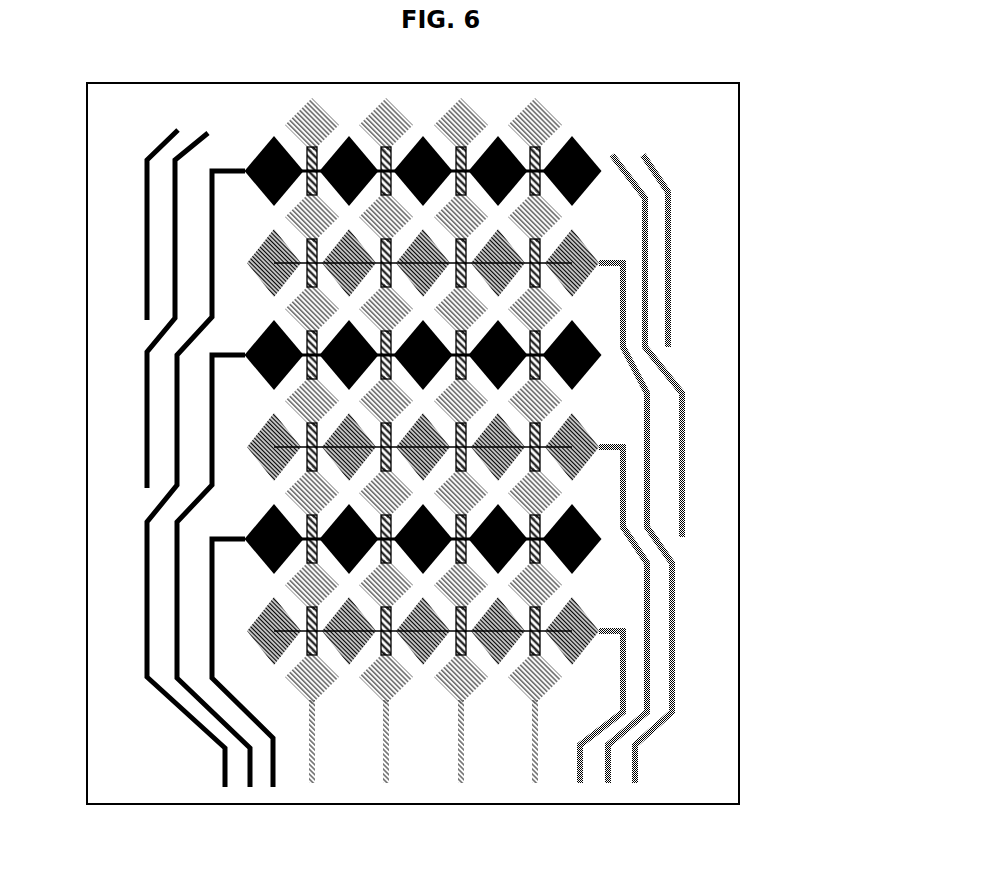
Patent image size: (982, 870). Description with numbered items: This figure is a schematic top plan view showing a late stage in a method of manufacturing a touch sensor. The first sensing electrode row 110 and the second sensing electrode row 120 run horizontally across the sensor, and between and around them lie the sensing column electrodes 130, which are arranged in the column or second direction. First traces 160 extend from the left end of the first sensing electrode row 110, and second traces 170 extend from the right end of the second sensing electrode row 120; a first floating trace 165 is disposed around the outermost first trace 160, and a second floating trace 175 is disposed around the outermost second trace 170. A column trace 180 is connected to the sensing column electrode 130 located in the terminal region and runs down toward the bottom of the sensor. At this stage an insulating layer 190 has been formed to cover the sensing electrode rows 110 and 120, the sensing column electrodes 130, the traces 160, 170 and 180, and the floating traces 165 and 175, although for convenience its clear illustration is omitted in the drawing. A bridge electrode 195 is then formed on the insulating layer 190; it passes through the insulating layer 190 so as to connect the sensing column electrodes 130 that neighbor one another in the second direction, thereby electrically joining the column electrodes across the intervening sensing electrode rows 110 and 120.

The first sensing electrode row 110 is at (257, 188).
The second sensing electrode row 120 is at (592, 250).
The sensing column electrode 130 is at (543, 128).
The first trace 160 is at (210, 427).
The first floating trace 165 is at (140, 383).
The second trace 170 is at (652, 472).
The second floating trace 175 is at (683, 430).
The column trace 180 is at (547, 725).
The insulating layer 190 is at (718, 602).
The bridge electrode 195 is at (543, 637).